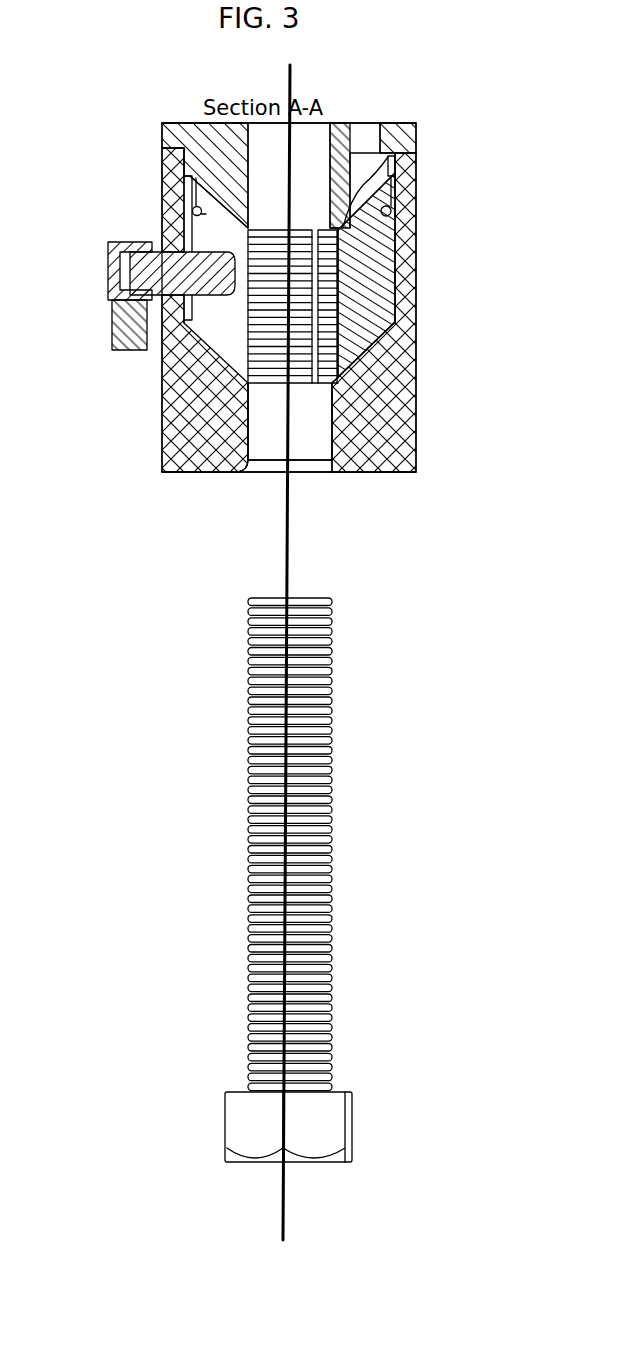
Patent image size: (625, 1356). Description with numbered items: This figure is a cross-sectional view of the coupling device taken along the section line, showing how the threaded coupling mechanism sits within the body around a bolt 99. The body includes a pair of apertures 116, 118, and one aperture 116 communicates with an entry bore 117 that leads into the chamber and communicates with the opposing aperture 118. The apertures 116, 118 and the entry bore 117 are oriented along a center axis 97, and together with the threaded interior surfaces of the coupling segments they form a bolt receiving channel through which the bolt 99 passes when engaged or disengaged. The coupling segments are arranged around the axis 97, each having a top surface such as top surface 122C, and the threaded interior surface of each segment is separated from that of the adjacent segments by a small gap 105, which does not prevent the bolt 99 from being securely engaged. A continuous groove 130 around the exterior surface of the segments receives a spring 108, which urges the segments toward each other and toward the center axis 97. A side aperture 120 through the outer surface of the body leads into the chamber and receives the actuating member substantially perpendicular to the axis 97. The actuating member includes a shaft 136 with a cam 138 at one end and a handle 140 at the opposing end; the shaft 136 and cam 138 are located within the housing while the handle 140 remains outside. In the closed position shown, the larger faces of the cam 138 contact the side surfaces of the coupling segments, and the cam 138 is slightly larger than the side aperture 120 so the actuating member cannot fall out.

The center axis 97 is at (287, 525).
The bolt 99 is at (350, 1122).
The gap 105 is at (308, 384).
The spring 108 is at (392, 210).
The aperture 116 is at (310, 472).
The entry bore 117 is at (267, 432).
The aperture 118 is at (318, 122).
The side aperture 120 is at (203, 433).
The top surface 122C is at (392, 153).
The groove 130 is at (410, 230).
The shaft 136 is at (176, 215).
The cam 138 is at (168, 472).
The handle 140 is at (108, 303).